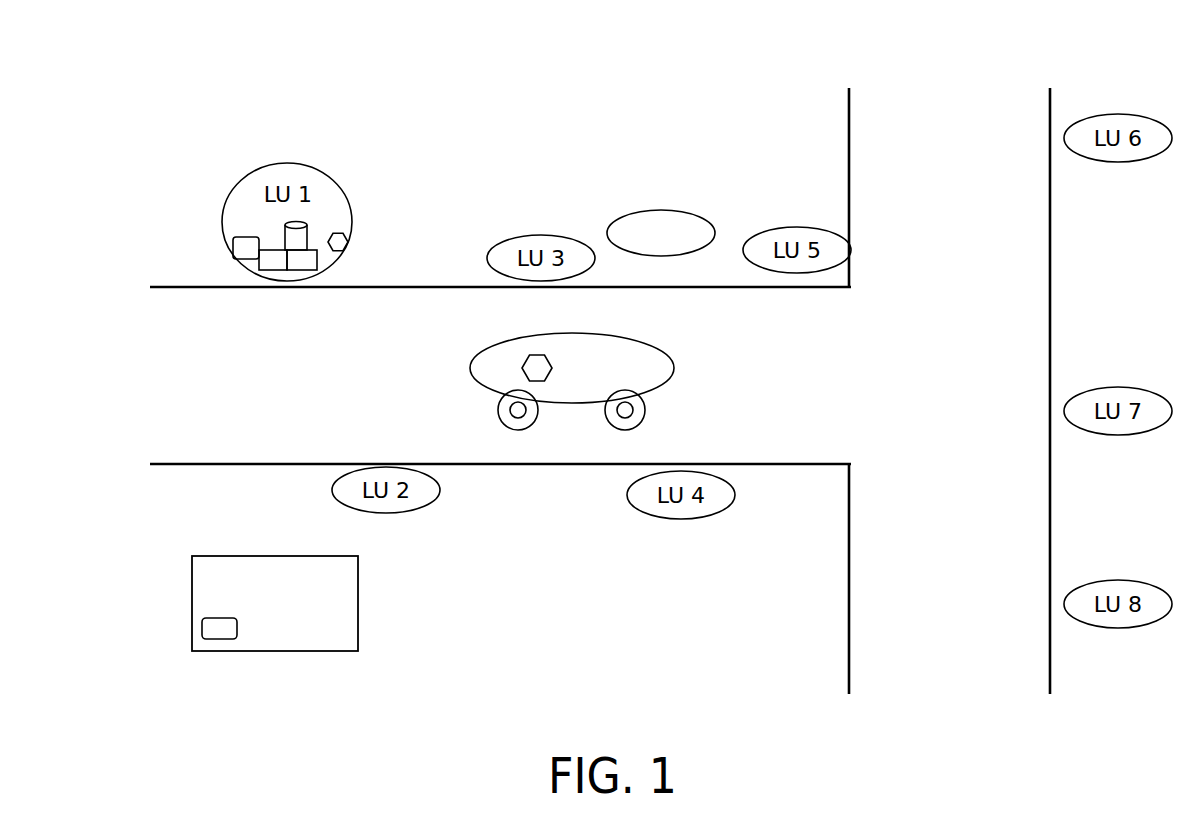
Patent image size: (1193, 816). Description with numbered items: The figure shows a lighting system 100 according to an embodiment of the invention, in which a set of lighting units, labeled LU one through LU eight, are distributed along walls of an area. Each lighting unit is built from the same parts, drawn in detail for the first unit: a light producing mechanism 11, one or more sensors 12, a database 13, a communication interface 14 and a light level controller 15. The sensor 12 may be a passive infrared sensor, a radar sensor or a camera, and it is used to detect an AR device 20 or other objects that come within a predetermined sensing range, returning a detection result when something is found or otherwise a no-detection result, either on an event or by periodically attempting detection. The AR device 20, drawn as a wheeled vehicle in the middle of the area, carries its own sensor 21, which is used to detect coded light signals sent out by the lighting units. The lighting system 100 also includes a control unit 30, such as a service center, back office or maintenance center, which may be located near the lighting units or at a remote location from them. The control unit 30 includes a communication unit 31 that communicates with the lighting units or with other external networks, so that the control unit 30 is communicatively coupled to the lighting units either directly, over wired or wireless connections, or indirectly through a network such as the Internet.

The lighting system 100 is at (128, 84).
The light producing mechanism 11 is at (234, 250).
The sensor 12 is at (350, 241).
The database 13 is at (303, 221).
The communication interface 14 is at (310, 272).
The light level controller 15 is at (276, 272).
The AR device 20 is at (661, 233).
The sensor 21 is at (523, 365).
The control unit 30 is at (323, 587).
The communication unit 31 is at (217, 640).